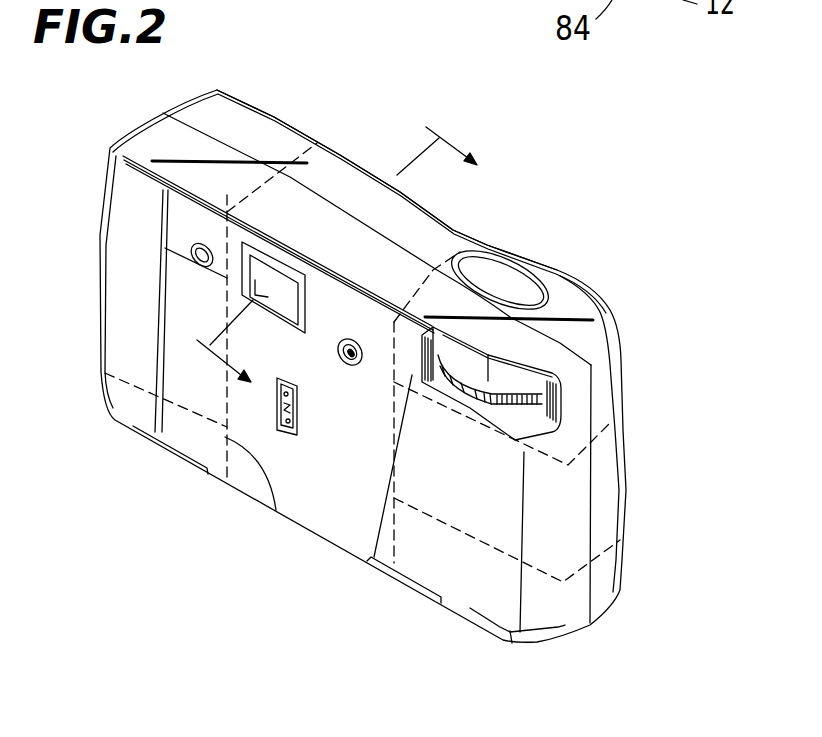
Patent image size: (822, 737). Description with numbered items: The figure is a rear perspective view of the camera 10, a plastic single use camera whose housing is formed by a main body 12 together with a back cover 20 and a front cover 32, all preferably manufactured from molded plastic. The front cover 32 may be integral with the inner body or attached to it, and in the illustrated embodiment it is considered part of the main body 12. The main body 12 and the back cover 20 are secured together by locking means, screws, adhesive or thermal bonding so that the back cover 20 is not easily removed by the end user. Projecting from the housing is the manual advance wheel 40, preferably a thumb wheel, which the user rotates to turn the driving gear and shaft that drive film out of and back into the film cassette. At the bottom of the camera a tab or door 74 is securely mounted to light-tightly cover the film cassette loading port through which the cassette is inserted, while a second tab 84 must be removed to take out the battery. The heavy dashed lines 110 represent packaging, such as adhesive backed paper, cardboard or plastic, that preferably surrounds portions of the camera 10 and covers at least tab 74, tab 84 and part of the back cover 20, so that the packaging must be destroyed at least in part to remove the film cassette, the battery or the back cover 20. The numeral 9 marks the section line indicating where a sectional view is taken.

The camera 10 is at (686, 473).
The main body 12 is at (606, 610).
The back cover 20 is at (117, 264).
The front cover 32 is at (324, 163).
The manual advance wheel 40 is at (555, 427).
The tab or door 74 is at (508, 643).
The tab 84 is at (135, 430).
The heavy dashed lines 110 is at (374, 553).
The section line 9- 9 is at (348, 268).